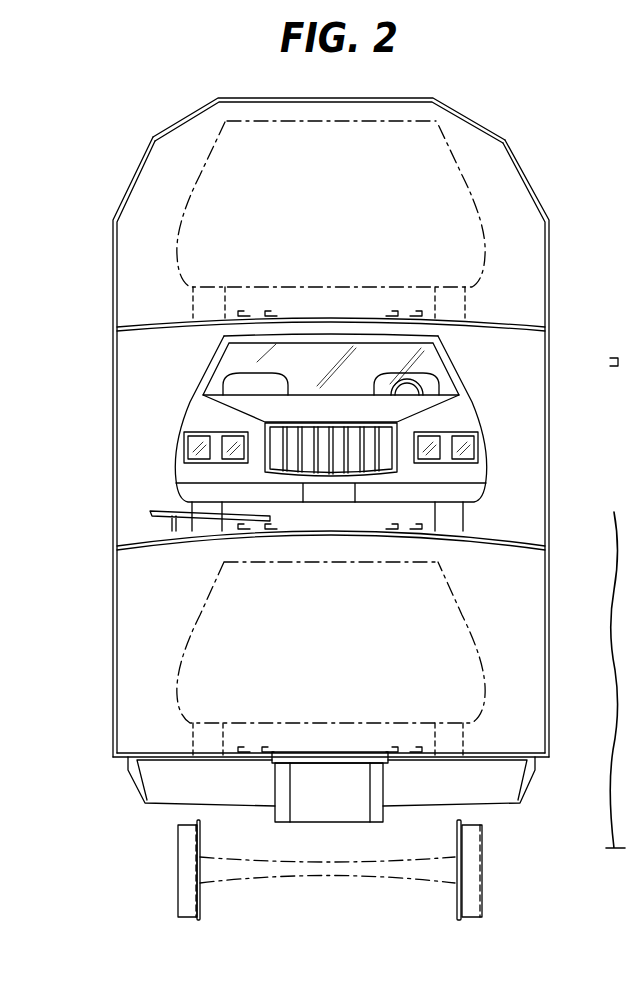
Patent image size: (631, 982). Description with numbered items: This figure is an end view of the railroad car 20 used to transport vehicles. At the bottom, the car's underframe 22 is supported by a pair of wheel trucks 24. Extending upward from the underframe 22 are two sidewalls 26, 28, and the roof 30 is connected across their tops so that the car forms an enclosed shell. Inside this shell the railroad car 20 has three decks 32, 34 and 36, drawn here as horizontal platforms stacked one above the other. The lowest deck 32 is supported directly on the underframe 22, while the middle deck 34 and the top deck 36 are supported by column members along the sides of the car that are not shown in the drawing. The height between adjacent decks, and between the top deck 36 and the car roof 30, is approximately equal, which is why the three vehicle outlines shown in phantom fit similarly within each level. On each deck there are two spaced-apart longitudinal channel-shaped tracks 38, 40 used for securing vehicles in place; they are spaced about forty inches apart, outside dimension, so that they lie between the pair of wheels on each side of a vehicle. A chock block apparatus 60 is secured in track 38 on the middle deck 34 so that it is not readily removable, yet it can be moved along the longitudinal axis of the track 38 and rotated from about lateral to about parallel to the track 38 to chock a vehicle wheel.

The railroad car 20 is at (335, 490).
The underframe 22 is at (395, 812).
The wheel trucks 24 is at (488, 893).
The sidewall 26 is at (112, 438).
The sidewall 28 is at (550, 357).
The roof 30 is at (430, 97).
The deck 32 is at (497, 752).
The deck 34 is at (493, 538).
The deck 36 is at (505, 323).
The track 38 is at (275, 310).
The track 40 is at (388, 312).
The chock block apparatus 60 is at (168, 503).